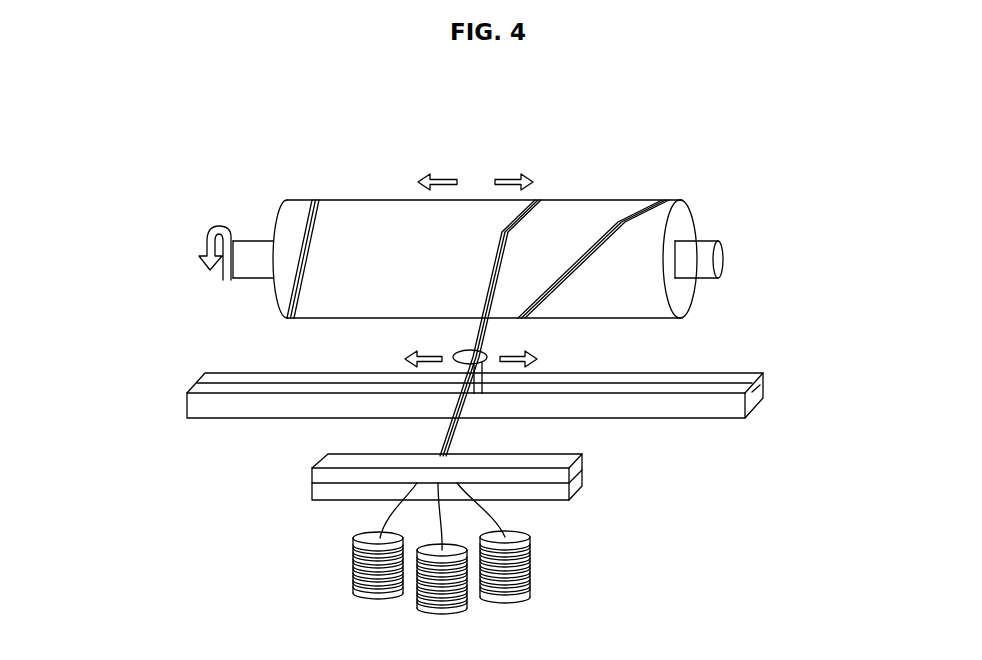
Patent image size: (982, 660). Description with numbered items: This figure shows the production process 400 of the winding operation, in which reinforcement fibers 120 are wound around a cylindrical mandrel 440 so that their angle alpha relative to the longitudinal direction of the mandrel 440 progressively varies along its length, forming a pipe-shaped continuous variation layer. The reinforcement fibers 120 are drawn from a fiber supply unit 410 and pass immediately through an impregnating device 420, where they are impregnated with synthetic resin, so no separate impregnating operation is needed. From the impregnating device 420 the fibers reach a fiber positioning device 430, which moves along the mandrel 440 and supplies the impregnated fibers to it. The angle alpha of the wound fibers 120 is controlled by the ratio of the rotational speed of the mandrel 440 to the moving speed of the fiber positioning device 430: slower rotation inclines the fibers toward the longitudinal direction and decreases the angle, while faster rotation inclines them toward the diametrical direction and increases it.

The winding apparatus 400 is at (174, 311).
The reinforcement fibers 120 is at (603, 225).
The supply bobbins 410 is at (531, 556).
The impregnating device 420 is at (582, 478).
The fiber positioning device 430 is at (763, 385).
The mandrel 440 is at (722, 256).